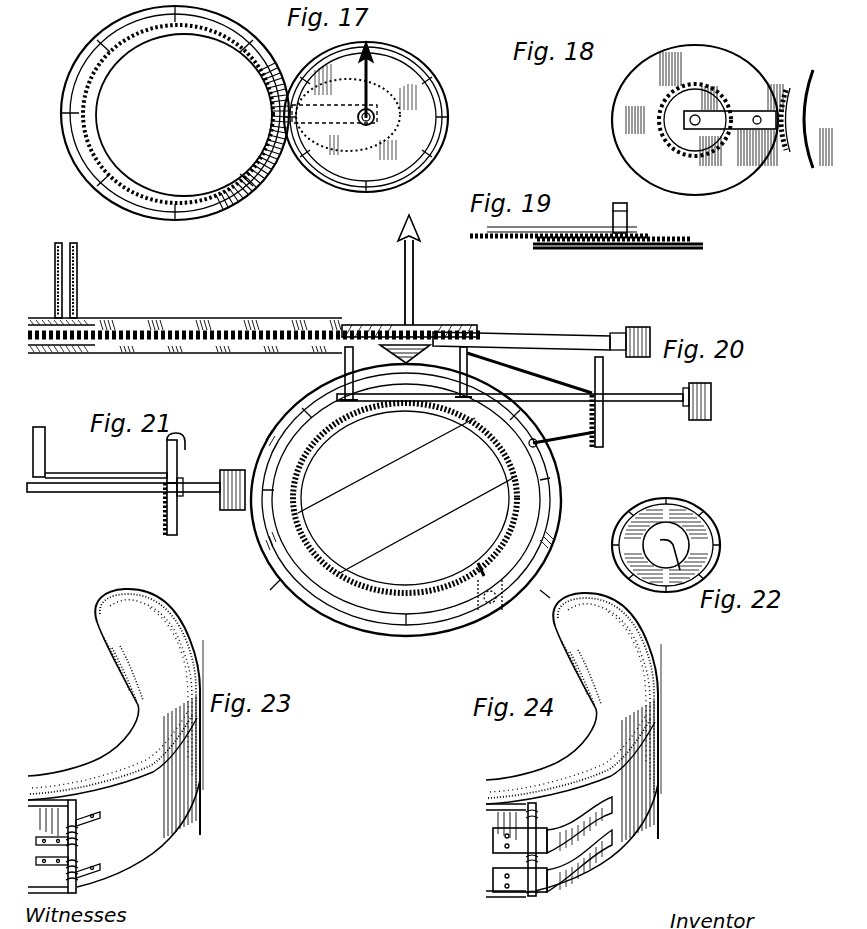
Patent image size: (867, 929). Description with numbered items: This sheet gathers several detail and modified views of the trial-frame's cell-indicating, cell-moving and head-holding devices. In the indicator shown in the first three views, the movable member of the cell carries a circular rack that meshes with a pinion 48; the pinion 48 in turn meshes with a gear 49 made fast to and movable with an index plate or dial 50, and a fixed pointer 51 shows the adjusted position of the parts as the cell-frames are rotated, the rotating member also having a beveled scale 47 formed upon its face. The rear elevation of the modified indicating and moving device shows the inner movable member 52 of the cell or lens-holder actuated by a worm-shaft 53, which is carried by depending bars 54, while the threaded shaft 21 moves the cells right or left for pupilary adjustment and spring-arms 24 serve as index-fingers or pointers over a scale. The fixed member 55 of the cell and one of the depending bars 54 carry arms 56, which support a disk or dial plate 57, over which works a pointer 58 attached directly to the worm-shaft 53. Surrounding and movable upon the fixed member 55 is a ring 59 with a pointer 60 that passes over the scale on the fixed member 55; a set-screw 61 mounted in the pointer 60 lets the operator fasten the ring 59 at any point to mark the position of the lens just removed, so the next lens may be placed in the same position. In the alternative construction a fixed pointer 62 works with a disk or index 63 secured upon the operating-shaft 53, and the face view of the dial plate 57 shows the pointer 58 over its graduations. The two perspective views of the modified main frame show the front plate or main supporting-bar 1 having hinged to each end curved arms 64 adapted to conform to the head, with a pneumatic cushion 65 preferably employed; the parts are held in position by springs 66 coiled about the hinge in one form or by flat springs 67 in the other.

In FIG. 23, the main supporting-bar 1 is at (60, 845).
In FIG. 24, the main supporting-bar 1 is at (490, 851).
In FIG. 20, the threaded shaft 21 is at (503, 340).
In FIG. 20, the spring-arms 24 is at (416, 278).
In FIG. 17, the beveled scale 47 is at (107, 200).
In FIG. 19, the beveled scale 47 is at (515, 233).
In FIG. 17, the pinion 48 is at (279, 117).
In FIG. 18, the pinion 48 is at (774, 80).
In FIG. 19, the pinion 48 is at (561, 244).
In FIG. 17, the gear 49 is at (395, 130).
In FIG. 18, the gear 49 is at (704, 92).
In FIG. 19, the gear 49 is at (655, 238).
In FIG. 17, the index plate or dial 50 is at (447, 104).
In FIG. 18, the index plate or dial 50 is at (722, 120).
In FIG. 19, the index plate or dial 50 is at (703, 246).
In FIG. 17, the fixed pointer 51 is at (369, 71).
In FIG. 20, the inner movable member of the cell 52 is at (405, 498).
In FIG. 20, the worm-shaft 53 is at (524, 401).
In FIG. 21, the worm-shaft 53 is at (136, 490).
In FIG. 20, the depending bars 54 is at (345, 365).
In FIG. 20, the fixed member of the cell 55 is at (290, 405).
In FIG. 20, the arms 56 is at (531, 407).
In FIG. 20, the disk or dial plate 57 is at (604, 374).
In FIG. 22, the disk or dial plate 57 is at (690, 506).
In FIG. 20, the pointer 58 is at (604, 424).
In FIG. 22, the pointer 58 is at (675, 588).
In FIG. 20, the ring 59 is at (380, 626).
In FIG. 20, the pointer 60 is at (476, 565).
In FIG. 20, the set-screw 61 is at (506, 600).
In FIG. 21, the fixed pointer 62 is at (186, 444).
In FIG. 21, the disk or index 63 is at (178, 530).
In FIG. 23, the curved arms 64 is at (170, 840).
In FIG. 24, the curved arms 64 is at (646, 814).
In FIG. 23, the pneumatic cushion 65 is at (85, 699).
In FIG. 24, the pneumatic cushion 65 is at (572, 766).
In FIG. 23, the springs 66 is at (80, 850).
In FIG. 24, the flat springs 67 is at (606, 851).